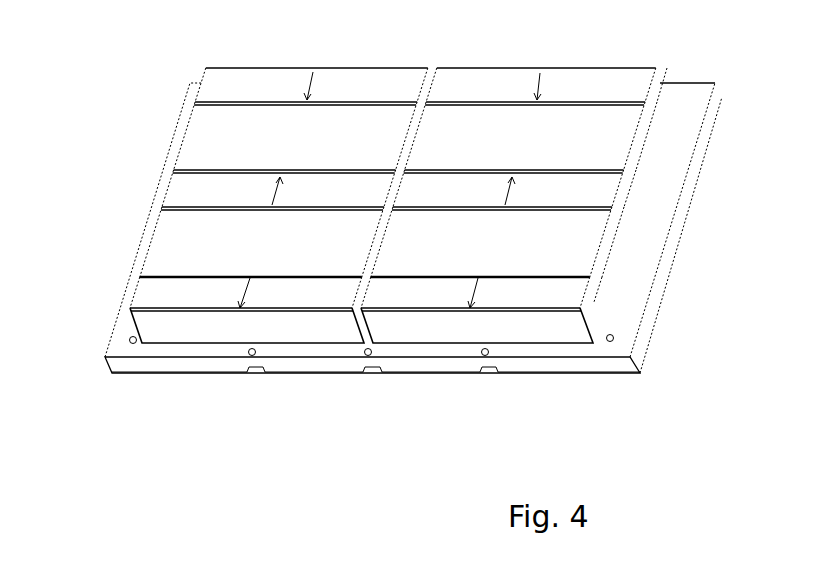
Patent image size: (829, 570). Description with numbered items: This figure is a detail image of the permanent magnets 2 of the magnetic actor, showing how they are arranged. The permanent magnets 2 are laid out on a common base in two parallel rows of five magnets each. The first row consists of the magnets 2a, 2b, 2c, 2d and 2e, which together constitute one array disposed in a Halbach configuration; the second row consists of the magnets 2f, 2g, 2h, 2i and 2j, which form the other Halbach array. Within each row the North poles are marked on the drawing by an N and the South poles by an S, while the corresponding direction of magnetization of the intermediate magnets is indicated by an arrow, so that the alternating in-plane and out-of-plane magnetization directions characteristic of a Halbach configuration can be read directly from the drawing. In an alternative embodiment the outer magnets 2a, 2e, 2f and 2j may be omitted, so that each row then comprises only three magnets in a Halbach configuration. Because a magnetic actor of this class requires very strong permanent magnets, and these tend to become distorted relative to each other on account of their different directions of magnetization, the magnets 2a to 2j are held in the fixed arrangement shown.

The permanent magnets 2 is at (321, 372).
The magnet 2a is at (148, 313).
The magnet 2b is at (172, 250).
The magnet 2c is at (190, 197).
The magnet 2d is at (200, 137).
The magnet 2e is at (210, 95).
The magnet 2f is at (567, 292).
The magnet 2g is at (577, 248).
The magnet 2h is at (587, 197).
The magnet 2i is at (605, 157).
The magnet 2j is at (627, 83).